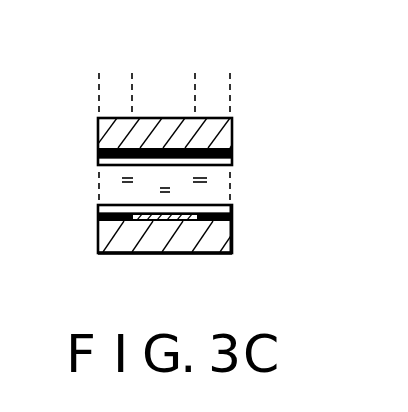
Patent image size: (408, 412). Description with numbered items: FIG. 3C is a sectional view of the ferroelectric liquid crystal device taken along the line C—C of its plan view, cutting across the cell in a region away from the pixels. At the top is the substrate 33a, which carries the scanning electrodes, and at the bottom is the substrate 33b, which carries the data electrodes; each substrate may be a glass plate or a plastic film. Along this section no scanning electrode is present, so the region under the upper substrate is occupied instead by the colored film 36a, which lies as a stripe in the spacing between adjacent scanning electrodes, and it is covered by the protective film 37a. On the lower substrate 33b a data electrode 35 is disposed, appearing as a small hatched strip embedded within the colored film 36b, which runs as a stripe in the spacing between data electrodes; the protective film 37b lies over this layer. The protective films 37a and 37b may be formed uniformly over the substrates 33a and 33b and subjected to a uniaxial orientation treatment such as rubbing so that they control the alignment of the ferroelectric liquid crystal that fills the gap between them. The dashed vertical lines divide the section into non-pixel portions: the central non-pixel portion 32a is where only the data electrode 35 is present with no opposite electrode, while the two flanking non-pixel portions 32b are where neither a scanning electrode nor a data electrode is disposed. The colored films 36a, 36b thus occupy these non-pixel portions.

The non-pixel portion 32a is at (168, 96).
The non-pixel portion 32b is at (118, 94).
The substrate 33a is at (232, 118).
The substrate 33b is at (232, 232).
The data electrode 35 is at (176, 221).
The colored film 36a is at (232, 148).
The colored film 36b is at (232, 213).
The protective film 37a is at (232, 160).
The protective film 37b is at (232, 207).